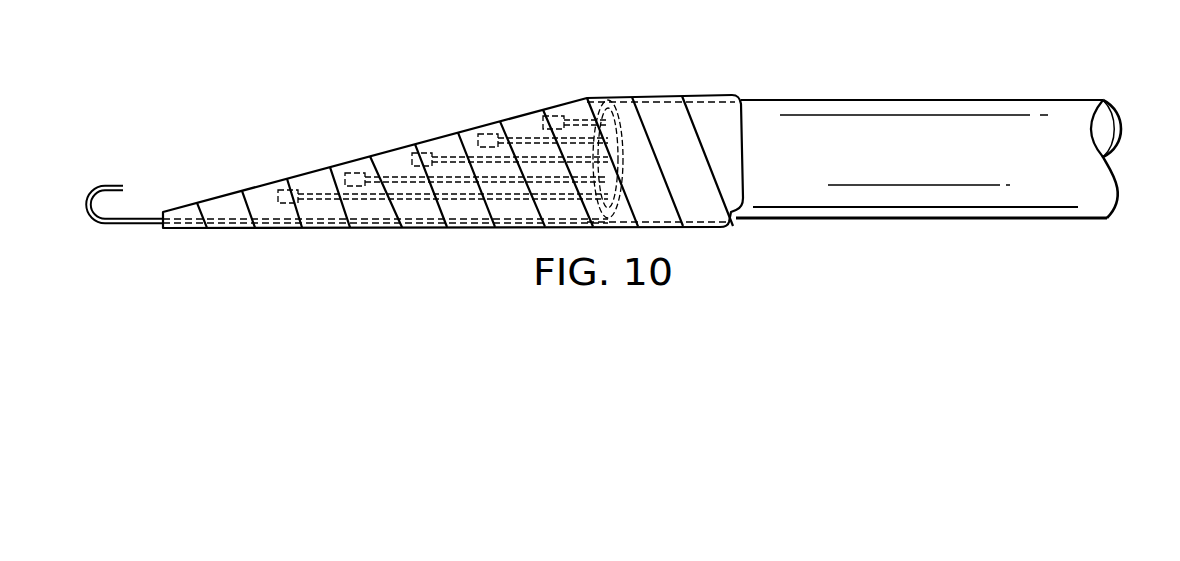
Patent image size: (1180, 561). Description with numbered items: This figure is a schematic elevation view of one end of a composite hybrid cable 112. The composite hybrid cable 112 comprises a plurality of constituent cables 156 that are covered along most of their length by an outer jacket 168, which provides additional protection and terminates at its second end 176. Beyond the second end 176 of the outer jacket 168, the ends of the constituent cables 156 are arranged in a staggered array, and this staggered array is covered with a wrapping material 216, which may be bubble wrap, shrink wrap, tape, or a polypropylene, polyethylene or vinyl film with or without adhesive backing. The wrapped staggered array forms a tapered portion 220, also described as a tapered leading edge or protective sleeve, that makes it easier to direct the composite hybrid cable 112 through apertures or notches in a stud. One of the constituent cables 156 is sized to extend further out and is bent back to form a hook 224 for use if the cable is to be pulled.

The hook 224 is at (104, 184).
The tapered portion 220 is at (247, 166).
The wrapping material 216 is at (390, 163).
The constituent cables 156 is at (316, 190).
The second end of outer jacket 176 is at (600, 98).
The outer jacket 168 is at (862, 99).
The composite hybrid cable 112 is at (1003, 100).